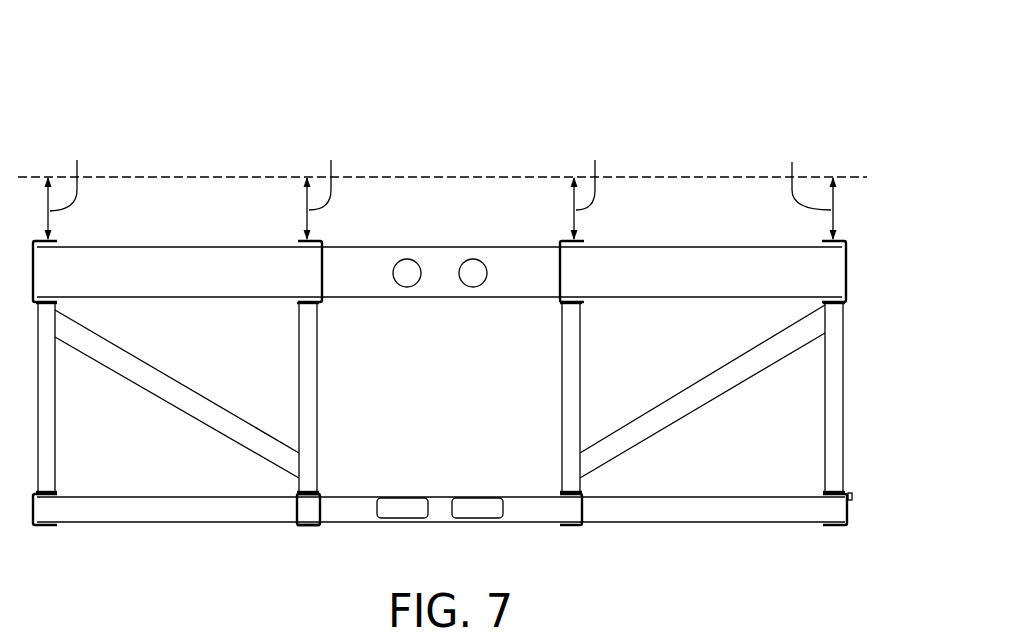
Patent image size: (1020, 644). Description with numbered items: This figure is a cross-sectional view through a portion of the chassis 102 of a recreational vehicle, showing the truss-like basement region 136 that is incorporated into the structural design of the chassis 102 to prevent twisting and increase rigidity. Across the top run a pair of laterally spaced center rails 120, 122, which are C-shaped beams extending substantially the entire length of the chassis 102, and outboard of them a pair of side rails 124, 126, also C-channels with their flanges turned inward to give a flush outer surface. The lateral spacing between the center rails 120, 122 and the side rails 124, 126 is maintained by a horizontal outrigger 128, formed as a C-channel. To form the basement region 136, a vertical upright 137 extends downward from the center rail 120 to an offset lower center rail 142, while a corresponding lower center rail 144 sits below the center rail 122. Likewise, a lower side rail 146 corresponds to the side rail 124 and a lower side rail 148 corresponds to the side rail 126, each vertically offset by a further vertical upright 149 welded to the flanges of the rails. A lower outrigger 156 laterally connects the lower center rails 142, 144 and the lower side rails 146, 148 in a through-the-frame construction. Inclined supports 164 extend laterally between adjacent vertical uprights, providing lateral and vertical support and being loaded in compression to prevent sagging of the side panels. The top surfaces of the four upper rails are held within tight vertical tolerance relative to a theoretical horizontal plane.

The chassis 102 is at (683, 60).
The center rail 120 is at (563, 272).
The center rail 122 is at (316, 272).
The side rail 124 is at (847, 267).
The side rail 126 is at (37, 270).
The horizontal outrigger 128 is at (708, 253).
The basement region 136 is at (855, 438).
The vertical upright 137 is at (563, 398).
The lower center rail 142 is at (585, 508).
The lower center rail 144 is at (297, 507).
The lower side rail 146 is at (847, 507).
The lower side rail 148 is at (38, 507).
The vertical upright 149 is at (832, 397).
The lower outrigger 156 is at (697, 510).
The support 164 is at (688, 402).